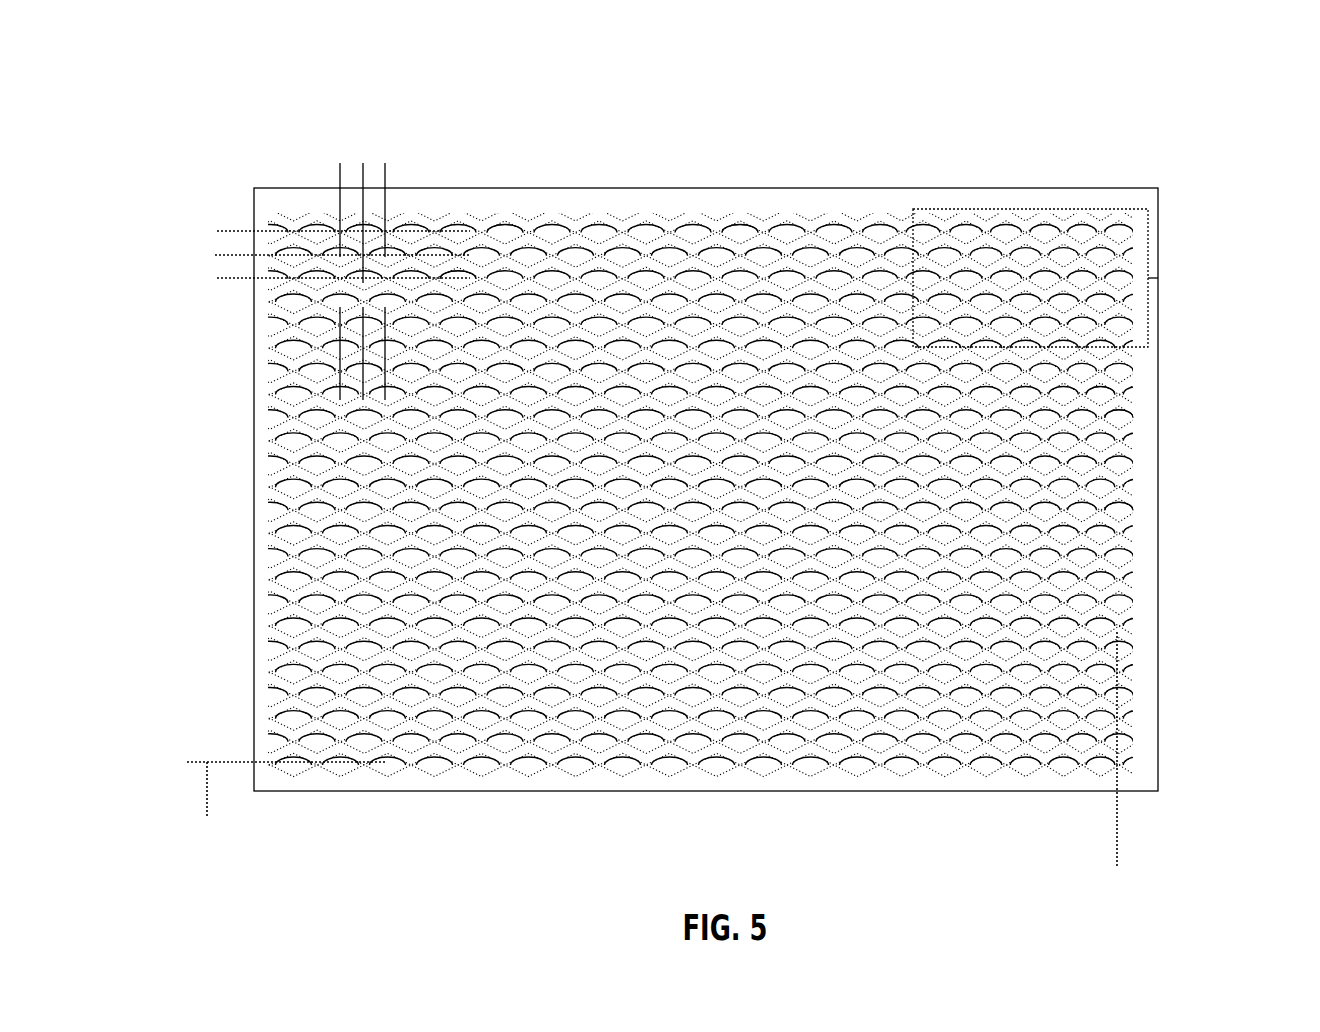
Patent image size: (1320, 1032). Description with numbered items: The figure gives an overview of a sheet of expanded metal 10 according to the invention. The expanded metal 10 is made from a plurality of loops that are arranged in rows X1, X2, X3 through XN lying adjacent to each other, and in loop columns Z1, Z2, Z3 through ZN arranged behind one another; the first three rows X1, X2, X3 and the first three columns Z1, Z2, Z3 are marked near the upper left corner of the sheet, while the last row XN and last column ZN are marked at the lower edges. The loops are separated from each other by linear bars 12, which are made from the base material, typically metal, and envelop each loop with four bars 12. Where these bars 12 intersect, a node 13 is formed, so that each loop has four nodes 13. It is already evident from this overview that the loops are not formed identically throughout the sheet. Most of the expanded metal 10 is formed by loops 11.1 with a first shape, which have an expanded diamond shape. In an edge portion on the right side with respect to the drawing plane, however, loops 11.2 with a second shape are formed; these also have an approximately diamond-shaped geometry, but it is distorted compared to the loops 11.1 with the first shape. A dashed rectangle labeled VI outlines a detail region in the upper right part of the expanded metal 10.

The expanded metal 10 is at (1182, 125).
The loops with a first shape 11.1 is at (556, 222).
The loops with a second shape 11.2 is at (1127, 404).
The bars 12 is at (519, 228).
The node 13 is at (482, 270).
The detail region VI is at (1040, 210).
The loop column Z1 is at (340, 183).
The loop column Z2 is at (363, 177).
The loop column Z3 is at (385, 182).
The row X1 is at (217, 231).
The row X2 is at (215, 255).
The row X3 is at (217, 278).
The row XN is at (207, 817).
The loop column ZN is at (1117, 847).